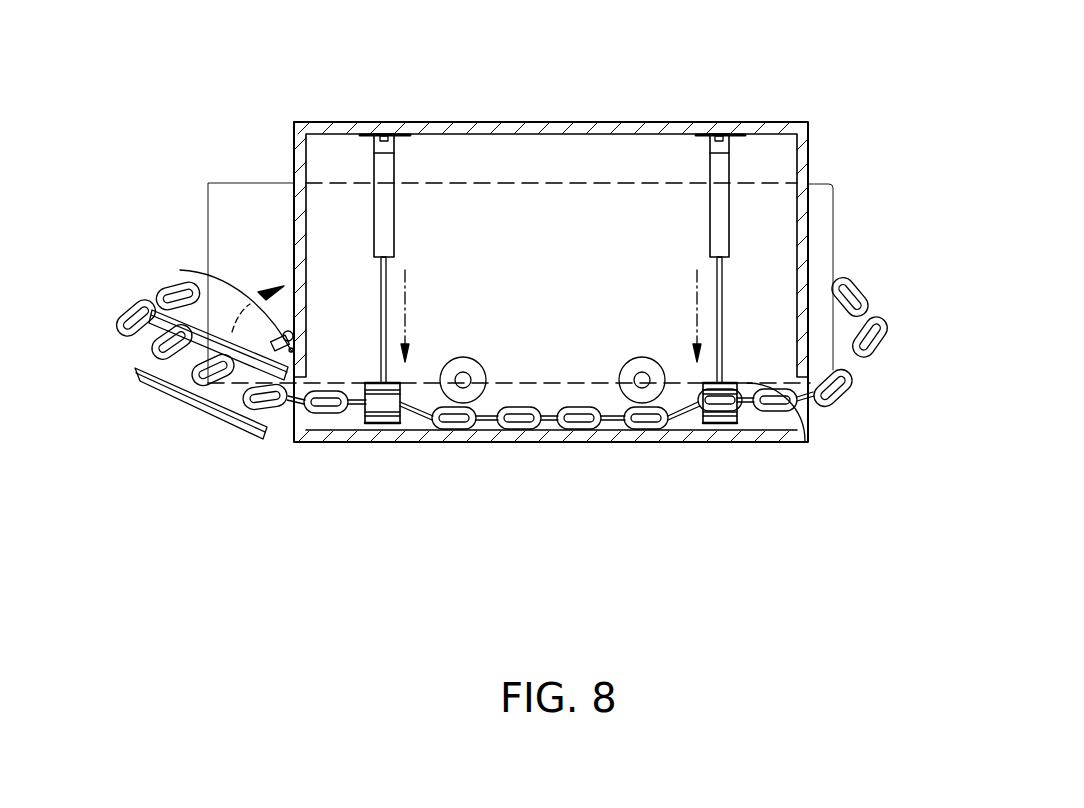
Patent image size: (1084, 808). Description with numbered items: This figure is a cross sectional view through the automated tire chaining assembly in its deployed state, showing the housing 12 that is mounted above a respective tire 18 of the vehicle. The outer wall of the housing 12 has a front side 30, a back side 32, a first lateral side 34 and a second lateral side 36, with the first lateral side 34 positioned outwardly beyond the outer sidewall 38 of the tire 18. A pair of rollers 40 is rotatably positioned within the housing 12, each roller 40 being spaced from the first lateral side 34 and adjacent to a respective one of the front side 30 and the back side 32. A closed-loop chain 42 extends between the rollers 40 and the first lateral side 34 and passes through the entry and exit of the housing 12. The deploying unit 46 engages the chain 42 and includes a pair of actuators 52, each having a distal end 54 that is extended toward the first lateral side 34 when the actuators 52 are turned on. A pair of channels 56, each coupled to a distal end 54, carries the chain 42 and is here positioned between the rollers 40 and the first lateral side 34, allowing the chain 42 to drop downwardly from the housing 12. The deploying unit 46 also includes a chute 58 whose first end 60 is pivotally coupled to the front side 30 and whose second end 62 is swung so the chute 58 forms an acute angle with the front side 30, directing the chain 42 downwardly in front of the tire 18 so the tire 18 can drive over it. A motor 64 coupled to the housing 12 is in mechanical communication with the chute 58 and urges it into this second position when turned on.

The housing 12 is at (310, 122).
The tire 18 is at (208, 183).
The front side 30 is at (294, 153).
The back side 32 is at (808, 140).
The first lateral side 34 is at (606, 436).
The second lateral side 36 is at (605, 122).
The outer sidewall 38 is at (540, 363).
The rollers 40 is at (463, 357).
The chain 42 is at (880, 343).
The deploying unit 46 is at (370, 216).
The actuators 52 is at (394, 171).
The distal end 54 is at (365, 402).
The channels 56 is at (387, 423).
The chute 58 is at (177, 407).
The first end 60 is at (263, 435).
The second end 62 is at (135, 369).
The motor 64 is at (180, 270).